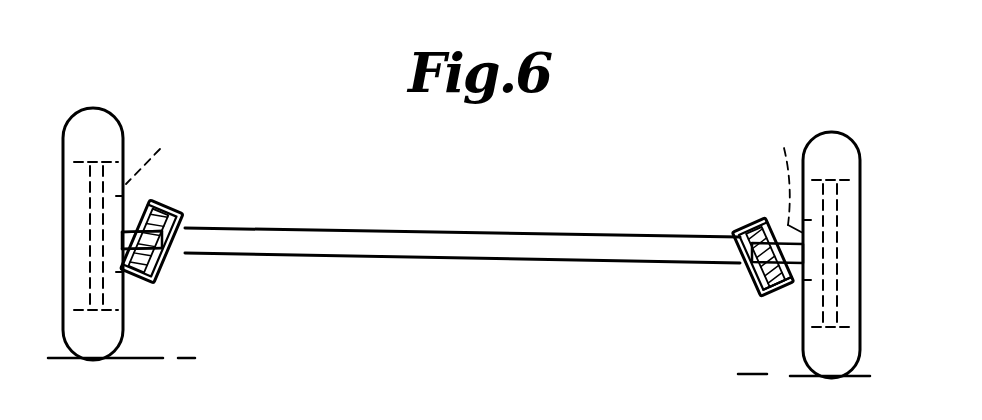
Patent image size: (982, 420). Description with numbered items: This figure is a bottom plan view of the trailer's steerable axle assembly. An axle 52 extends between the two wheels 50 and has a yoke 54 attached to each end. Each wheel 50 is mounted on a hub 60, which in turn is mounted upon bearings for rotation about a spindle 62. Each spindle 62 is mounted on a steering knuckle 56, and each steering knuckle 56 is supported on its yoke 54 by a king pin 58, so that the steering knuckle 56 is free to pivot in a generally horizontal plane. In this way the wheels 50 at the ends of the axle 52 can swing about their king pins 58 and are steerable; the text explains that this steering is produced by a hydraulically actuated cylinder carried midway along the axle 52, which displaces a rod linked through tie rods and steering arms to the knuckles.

The wheel 50 is at (100, 122).
The axle 52 is at (378, 232).
The yoke 54 is at (184, 215).
The steering knuckle 56 is at (161, 270).
The king pin 58 is at (763, 218).
The hub 60 is at (464, 184).
The spindle 62 is at (127, 232).